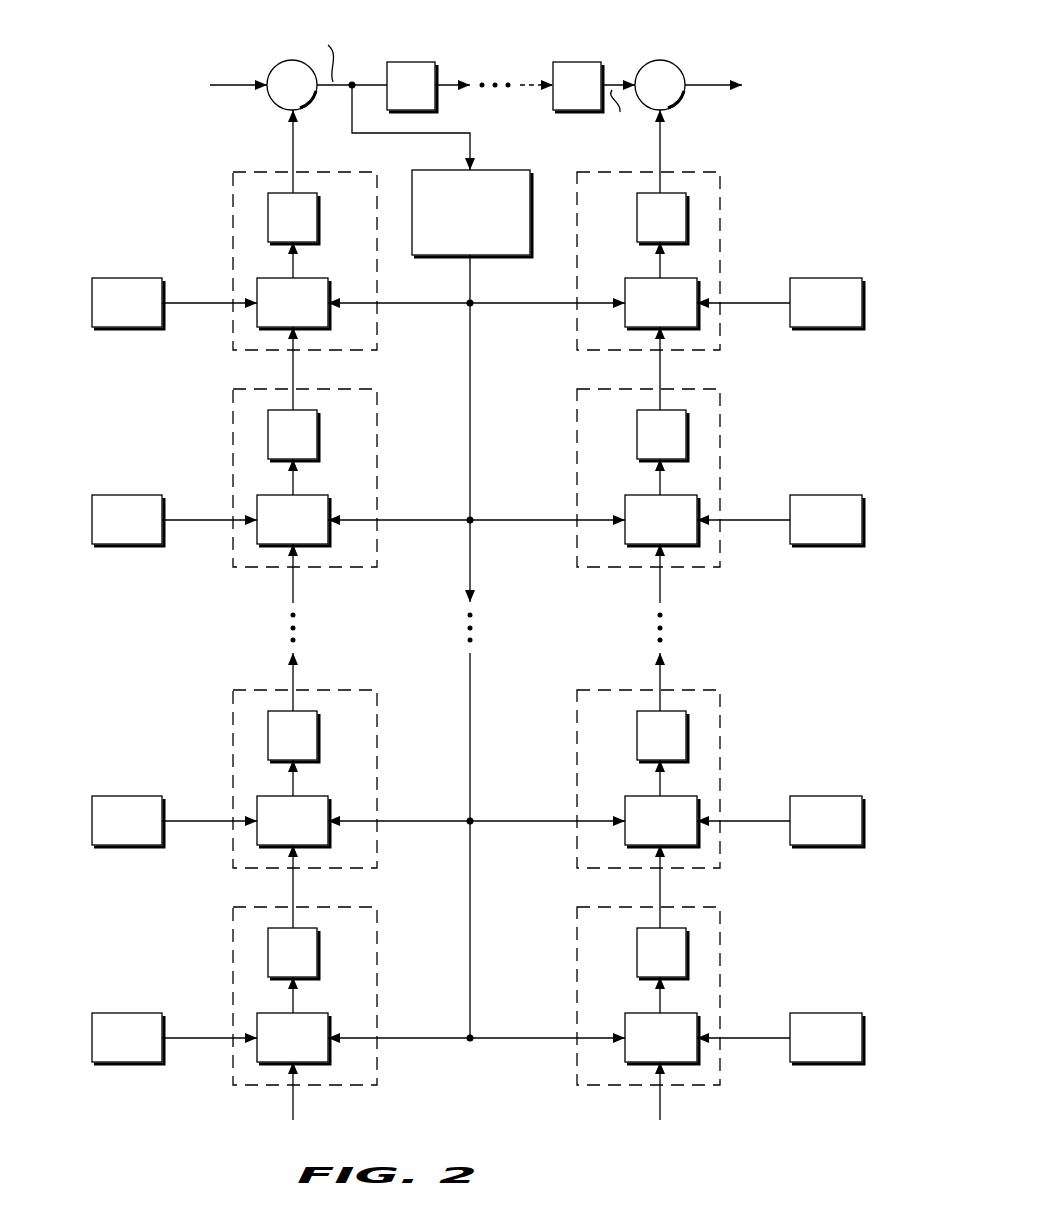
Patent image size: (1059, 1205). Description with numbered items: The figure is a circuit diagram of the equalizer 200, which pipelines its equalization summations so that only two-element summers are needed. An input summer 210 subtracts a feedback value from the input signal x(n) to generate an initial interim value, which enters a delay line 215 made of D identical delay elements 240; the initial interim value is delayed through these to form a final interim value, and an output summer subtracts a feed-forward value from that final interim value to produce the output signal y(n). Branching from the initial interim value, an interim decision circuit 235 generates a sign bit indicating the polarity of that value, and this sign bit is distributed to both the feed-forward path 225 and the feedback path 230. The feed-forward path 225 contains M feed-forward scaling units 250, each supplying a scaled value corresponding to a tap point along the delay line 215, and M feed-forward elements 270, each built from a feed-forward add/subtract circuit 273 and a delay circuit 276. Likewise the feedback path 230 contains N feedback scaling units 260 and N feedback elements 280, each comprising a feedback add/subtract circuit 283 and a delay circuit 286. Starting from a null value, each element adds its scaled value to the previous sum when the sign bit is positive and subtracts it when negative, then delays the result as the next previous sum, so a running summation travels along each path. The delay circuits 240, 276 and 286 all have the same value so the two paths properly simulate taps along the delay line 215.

The equalizer 200 is at (521, 1133).
The input summer 210 is at (307, 108).
The delay line 215 is at (497, 62).
The feed-forward path 225 is at (622, 630).
The feedback path 230 is at (655, 61).
The interim decision circuit 235 is at (508, 256).
The delay element 240 is at (407, 62).
The feed-forward scaling unit 250 is at (843, 278).
The feedback scaling unit 260 is at (108, 278).
The feed-forward element 270 is at (721, 212).
The feed-forward add/subtract circuit 273 is at (636, 278).
The delay circuit 276 is at (636, 211).
The feedback element 280 is at (232, 212).
The feedback add/subtract circuit 283 is at (318, 278).
The delay circuit 286 is at (321, 210).